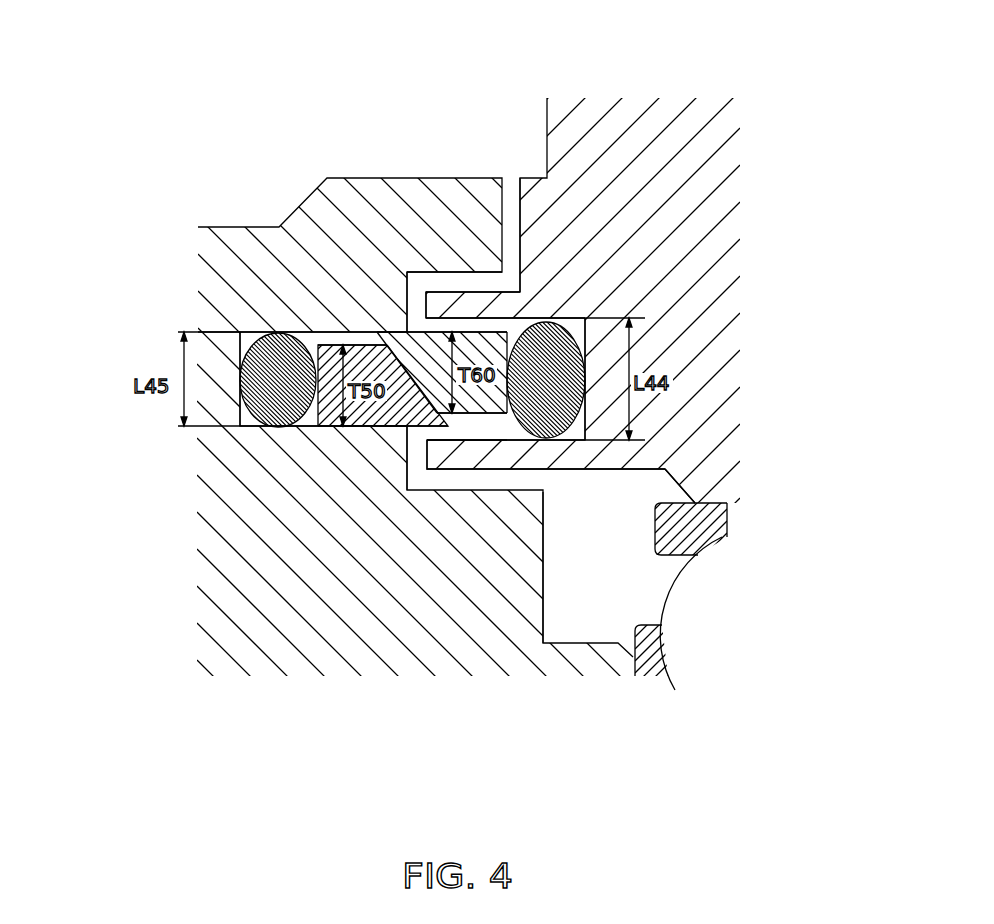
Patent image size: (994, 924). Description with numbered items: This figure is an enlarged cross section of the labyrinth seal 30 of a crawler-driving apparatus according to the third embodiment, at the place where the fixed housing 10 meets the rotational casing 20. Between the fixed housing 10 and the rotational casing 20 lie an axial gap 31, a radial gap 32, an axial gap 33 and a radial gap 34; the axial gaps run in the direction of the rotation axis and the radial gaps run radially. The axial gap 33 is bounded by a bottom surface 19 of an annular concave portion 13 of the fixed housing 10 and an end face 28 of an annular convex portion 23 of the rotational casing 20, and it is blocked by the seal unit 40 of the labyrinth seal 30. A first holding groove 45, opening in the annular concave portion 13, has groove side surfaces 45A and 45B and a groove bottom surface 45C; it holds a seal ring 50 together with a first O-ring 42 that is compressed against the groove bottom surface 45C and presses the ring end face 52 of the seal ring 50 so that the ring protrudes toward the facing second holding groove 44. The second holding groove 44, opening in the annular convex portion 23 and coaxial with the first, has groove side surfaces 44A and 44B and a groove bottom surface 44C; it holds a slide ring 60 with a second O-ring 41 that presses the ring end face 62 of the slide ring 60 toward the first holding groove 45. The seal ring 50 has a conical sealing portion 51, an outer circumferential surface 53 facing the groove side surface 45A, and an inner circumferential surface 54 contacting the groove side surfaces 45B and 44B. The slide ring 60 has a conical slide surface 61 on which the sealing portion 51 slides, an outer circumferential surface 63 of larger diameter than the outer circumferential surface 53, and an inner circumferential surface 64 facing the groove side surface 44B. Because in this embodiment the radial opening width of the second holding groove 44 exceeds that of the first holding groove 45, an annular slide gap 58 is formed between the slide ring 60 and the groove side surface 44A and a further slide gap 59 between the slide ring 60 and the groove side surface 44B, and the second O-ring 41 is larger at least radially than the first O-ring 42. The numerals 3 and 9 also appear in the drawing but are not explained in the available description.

The rotating shaft 3 is at (738, 672).
The space 9 is at (597, 594).
The fixed housing 10 is at (205, 227).
The annular concave portion 13 is at (457, 284).
The bottom surface 19 is at (407, 300).
The rotational casing 20 is at (742, 100).
The annular convex portion 23 is at (560, 472).
The end face 28 is at (422, 470).
The labyrinth seal 30 is at (466, 168).
The axial gap 31 is at (507, 200).
The radial gap 32 is at (462, 262).
The axial gap 33 is at (418, 276).
The radial gap 34 is at (543, 497).
The seal unit 40 is at (252, 448).
The second O-ring 41 is at (548, 447).
The first O-ring 42 is at (287, 362).
The second holding groove 44 is at (654, 379).
The groove side surface 44A is at (588, 328).
The groove side surface 44B is at (588, 440).
The groove bottom surface 44C is at (588, 395).
The first holding groove 45 is at (218, 375).
The groove side surface 45A is at (242, 334).
The groove side surface 45B is at (240, 426).
The groove bottom surface 45C is at (240, 362).
The seal ring 50 is at (344, 495).
The sealing portion 51 is at (418, 400).
The ring end face 52 is at (303, 412).
The outer circumferential surface 53 is at (333, 400).
The inner circumferential surface 54 is at (375, 348).
The slide gap 58 is at (470, 430).
The slide gap 59 is at (500, 445).
The slide ring 60 is at (624, 372).
The slide surface 61 is at (420, 310).
The ring end face 62 is at (462, 326).
The outer circumferential surface 63 is at (440, 326).
The inner circumferential surface 64 is at (562, 330).